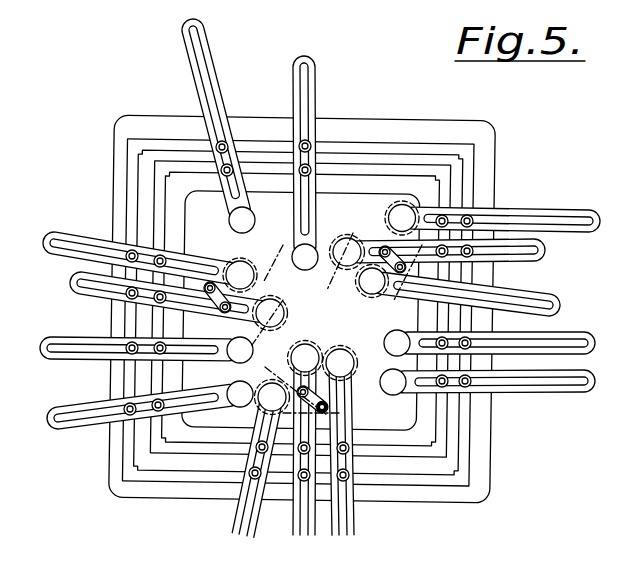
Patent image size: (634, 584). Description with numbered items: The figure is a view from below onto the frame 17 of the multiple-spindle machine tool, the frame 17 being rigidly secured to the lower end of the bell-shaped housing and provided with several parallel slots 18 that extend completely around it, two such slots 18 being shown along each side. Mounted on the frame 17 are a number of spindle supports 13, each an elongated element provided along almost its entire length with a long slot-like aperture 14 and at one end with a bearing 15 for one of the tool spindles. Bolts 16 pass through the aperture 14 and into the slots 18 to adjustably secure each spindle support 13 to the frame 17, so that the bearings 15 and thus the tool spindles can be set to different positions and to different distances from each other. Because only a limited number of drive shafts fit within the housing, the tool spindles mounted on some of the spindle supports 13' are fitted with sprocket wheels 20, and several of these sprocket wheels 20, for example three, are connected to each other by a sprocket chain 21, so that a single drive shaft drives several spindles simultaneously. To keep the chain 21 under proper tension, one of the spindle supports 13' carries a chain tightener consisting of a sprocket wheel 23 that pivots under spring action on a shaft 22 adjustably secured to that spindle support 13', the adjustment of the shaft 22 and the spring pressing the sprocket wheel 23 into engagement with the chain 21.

The spindle support 13 is at (178, 244).
The spindle support 13' is at (304, 355).
The aperture 14 is at (203, 98).
The bearing 15 is at (250, 219).
The bolts 16 is at (442, 219).
The frame 17 is at (482, 437).
The parallel slots 18 is at (362, 172).
The sprocket wheels 20 is at (402, 213).
The sprocket chain 21 is at (337, 319).
The shaft 22 is at (383, 248).
The sprocket wheel 23 is at (210, 283).